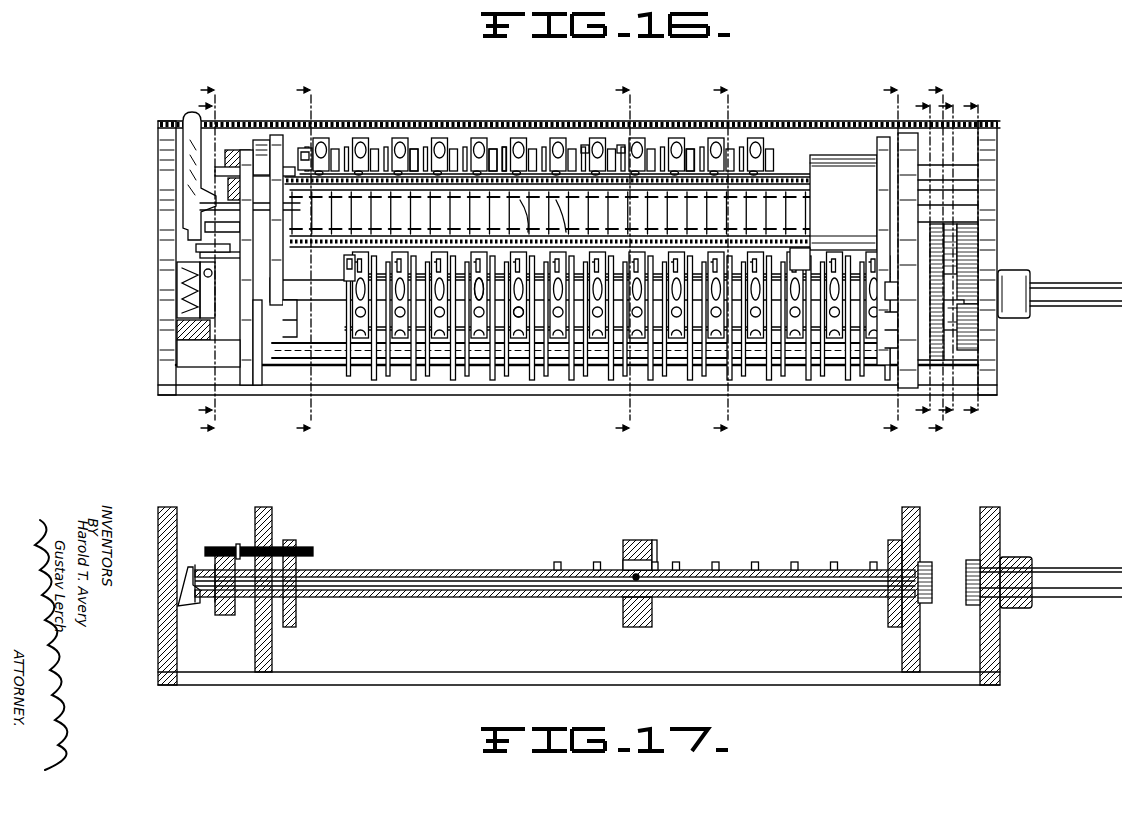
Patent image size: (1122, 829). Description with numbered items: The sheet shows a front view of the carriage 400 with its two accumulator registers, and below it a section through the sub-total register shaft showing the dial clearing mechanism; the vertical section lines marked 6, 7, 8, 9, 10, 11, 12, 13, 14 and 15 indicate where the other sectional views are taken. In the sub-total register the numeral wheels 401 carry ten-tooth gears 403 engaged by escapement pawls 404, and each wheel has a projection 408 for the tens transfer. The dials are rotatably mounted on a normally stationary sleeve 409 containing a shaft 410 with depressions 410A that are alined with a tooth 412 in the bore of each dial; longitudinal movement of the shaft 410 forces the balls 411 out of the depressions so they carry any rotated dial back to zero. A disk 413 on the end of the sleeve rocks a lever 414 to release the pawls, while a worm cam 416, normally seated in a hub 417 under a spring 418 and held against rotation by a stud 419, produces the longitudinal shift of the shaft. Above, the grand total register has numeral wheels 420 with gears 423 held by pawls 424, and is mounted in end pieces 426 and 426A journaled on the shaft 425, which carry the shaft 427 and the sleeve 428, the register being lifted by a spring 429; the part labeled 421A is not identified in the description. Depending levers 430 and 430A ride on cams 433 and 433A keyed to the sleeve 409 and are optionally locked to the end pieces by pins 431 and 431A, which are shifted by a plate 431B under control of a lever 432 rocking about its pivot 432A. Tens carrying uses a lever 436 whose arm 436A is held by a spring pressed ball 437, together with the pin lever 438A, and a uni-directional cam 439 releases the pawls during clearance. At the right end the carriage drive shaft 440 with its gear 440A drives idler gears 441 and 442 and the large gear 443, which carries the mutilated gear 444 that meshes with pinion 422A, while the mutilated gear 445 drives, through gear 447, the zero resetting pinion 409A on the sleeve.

In FIG. 16, the carriage 400 is at (466, 388).
In FIG. 17, the carriage 400 is at (446, 680).
In FIG. 16, the numeral wheels 401 is at (480, 340).
In FIG. 17, the numeral wheels 401 is at (640, 540).
In FIG. 16, the ten-tooth gears 403 is at (482, 296).
In FIG. 17, the ten-tooth gears 403 is at (656, 556).
In FIG. 16, the escapement pawls 404 is at (522, 318).
In FIG. 16, the projection 408 is at (346, 262).
In FIG. 17, the projection 408 is at (630, 560).
In FIG. 17, the sleeve 409 is at (742, 571).
In FIG. 17, the zero resetting pinion 409A is at (928, 562).
In FIG. 17, the shaft 410 is at (780, 571).
In FIG. 17, the depressions 410A is at (822, 571).
In FIG. 17, the ball 411 is at (632, 574).
In FIG. 17, the teeth 412 is at (657, 568).
In FIG. 16, the disk 413 is at (250, 312).
In FIG. 17, the disk 413 is at (262, 625).
In FIG. 16, the lever 414 is at (246, 383).
In FIG. 16, the worm cam 416 is at (200, 266).
In FIG. 16, the hub 417 is at (203, 278).
In FIG. 17, the hub 417 is at (230, 615).
In FIG. 16, the spring 418 is at (190, 298).
In FIG. 17, the spring 418 is at (180, 605).
In FIG. 16, the stud 419 is at (205, 254).
In FIG. 17, the stud 419 is at (205, 550).
In FIG. 16, the numeral wheels 420 is at (441, 146).
In FIG. 16, the lever 421A is at (620, 145).
In FIG. 16, the pinion 422A is at (256, 160).
In FIG. 16, the ten-tooth gear 423 is at (492, 150).
In FIG. 16, the spring pressed pawls 424 is at (537, 222).
In FIG. 16, the shaft 425 is at (228, 198).
In FIG. 16, the end piece 426 is at (278, 140).
In FIG. 16, the end piece 426A is at (880, 148).
In FIG. 16, the shaft 427 is at (582, 174).
In FIG. 16, the sleeve 428 is at (587, 218).
In FIG. 16, the spring 429 is at (224, 160).
In FIG. 16, the depending lever 430 is at (284, 292).
In FIG. 16, the depending lever 430A is at (896, 248).
In FIG. 16, the pin 431 is at (214, 186).
In FIG. 16, the pin 431A is at (210, 238).
In FIG. 16, the plate 431B is at (218, 224).
In FIG. 16, the lever 432 is at (184, 146).
In FIG. 16, the pivot point 432A is at (205, 273).
In FIG. 16, the cam 433 is at (288, 328).
In FIG. 17, the cam 433 is at (290, 628).
In FIG. 16, the cam 433A is at (890, 350).
In FIG. 17, the cam 433A is at (888, 612).
In FIG. 16, the lever 436 is at (575, 222).
In FIG. 16, the arm 436A is at (505, 150).
In FIG. 16, the spring pressed ball 437 is at (414, 150).
In FIG. 16, the lever 438A is at (690, 150).
In FIG. 16, the uni-directional cam 439 is at (306, 148).
In FIG. 16, the carriage drive shaft 440 is at (1072, 282).
In FIG. 17, the carriage drive shaft 440 is at (1068, 572).
In FIG. 16, the gear 440A is at (968, 300).
In FIG. 17, the gear 440A is at (974, 606).
In FIG. 16, the idler gear 441 is at (960, 332).
In FIG. 16, the idler gear 442 is at (962, 314).
In FIG. 16, the large gear 443 is at (962, 234).
In FIG. 16, the mutilated gear 444 is at (960, 250).
In FIG. 16, the mutilated gear 445 is at (962, 266).
In FIG. 16, the gear 447 is at (922, 352).
In FIG. 16, the section line 6 is at (977, 258).
In FIG. 16, the section line 7 is at (952, 258).
In FIG. 16, the section line 8 is at (942, 259).
In FIG. 16, the section line 9 is at (929, 258).
In FIG. 16, the section line 10 is at (902, 259).
In FIG. 16, the section line 11 is at (732, 259).
In FIG. 16, the section line 12 is at (634, 259).
In FIG. 16, the section line 13 is at (315, 259).
In FIG. 16, the section line 14 is at (200, 259).
In FIG. 16, the section line 15 is at (218, 258).